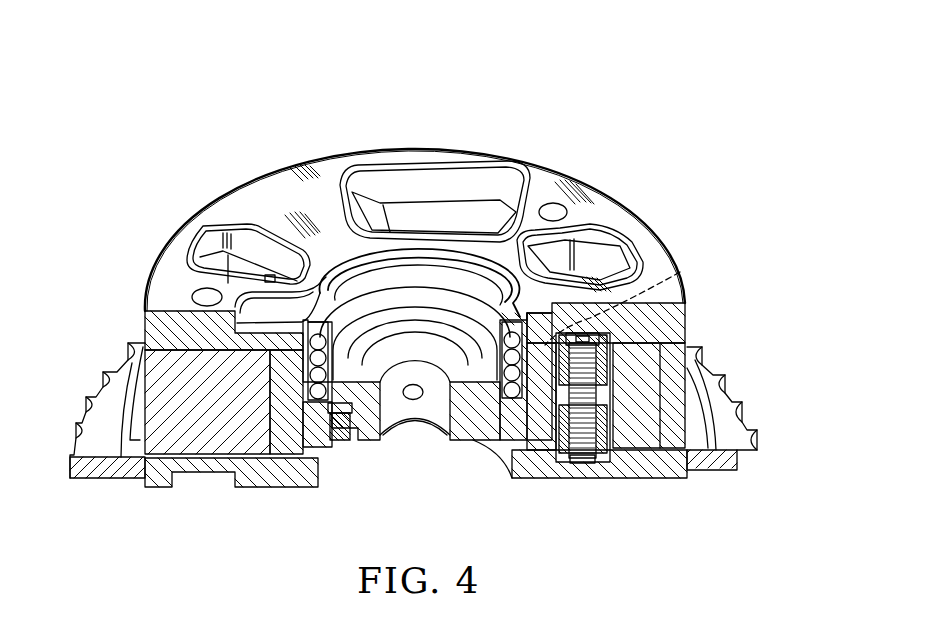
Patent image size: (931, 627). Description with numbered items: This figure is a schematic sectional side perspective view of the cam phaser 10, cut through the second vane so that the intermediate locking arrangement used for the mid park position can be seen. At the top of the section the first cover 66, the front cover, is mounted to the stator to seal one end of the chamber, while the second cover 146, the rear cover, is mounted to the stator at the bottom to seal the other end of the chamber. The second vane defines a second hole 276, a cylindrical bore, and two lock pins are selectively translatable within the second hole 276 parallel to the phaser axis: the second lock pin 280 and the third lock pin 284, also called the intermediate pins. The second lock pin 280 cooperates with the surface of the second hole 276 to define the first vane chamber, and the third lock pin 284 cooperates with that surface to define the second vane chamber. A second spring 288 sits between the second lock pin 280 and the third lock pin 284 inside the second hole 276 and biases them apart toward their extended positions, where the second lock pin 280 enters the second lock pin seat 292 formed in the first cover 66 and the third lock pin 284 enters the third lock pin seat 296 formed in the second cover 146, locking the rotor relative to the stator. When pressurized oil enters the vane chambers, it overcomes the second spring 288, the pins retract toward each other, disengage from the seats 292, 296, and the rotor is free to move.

The cam phaser 10 is at (555, 118).
The first cover 66 is at (188, 333).
The second cover 146 is at (160, 487).
The second hole 276 is at (605, 387).
The second lock pin 280 is at (603, 353).
The third lock pin 284 is at (610, 432).
The second spring 288 is at (592, 380).
The second lock pin seat 292 is at (672, 276).
The third lock pin seat 296 is at (567, 462).